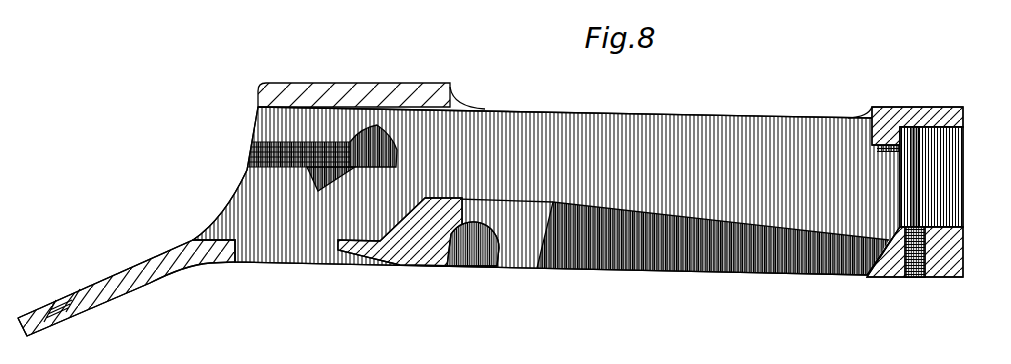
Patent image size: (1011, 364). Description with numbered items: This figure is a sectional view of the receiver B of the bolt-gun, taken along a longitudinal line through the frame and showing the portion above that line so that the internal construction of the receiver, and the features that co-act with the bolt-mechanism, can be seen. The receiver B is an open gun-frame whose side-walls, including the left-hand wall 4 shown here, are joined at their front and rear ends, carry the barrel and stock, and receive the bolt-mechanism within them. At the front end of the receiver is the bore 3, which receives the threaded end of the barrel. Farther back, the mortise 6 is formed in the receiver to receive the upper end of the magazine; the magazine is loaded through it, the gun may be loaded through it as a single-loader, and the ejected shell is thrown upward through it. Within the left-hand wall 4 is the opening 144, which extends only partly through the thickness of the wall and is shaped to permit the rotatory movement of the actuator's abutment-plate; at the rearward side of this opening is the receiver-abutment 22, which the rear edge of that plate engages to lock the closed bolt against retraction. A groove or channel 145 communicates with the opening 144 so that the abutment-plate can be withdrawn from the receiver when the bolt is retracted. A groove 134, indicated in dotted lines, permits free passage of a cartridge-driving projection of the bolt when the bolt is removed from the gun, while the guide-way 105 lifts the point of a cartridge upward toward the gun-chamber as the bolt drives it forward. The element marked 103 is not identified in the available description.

The receiver B is at (731, 119).
The left-hand side-wall 4 is at (547, 126).
The bore 3 is at (950, 157).
The mortise 6 is at (730, 255).
The receiver-abutment 22 is at (312, 184).
The pin 103 is at (469, 270).
The guide-way 105 is at (888, 237).
The groove 134 is at (446, 210).
The opening 144 is at (378, 124).
The groove 145 is at (252, 147).